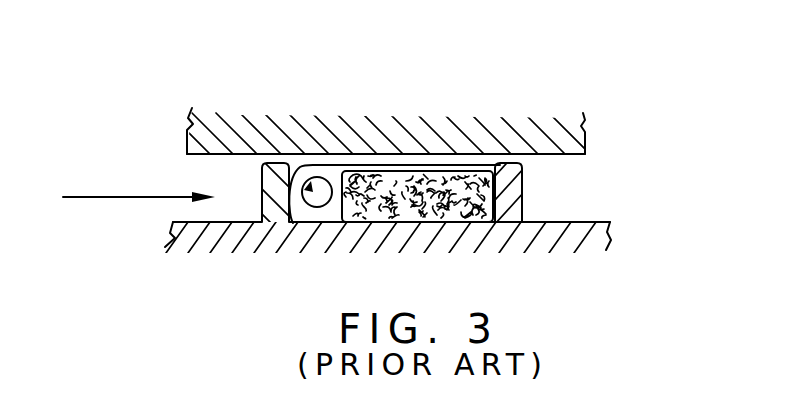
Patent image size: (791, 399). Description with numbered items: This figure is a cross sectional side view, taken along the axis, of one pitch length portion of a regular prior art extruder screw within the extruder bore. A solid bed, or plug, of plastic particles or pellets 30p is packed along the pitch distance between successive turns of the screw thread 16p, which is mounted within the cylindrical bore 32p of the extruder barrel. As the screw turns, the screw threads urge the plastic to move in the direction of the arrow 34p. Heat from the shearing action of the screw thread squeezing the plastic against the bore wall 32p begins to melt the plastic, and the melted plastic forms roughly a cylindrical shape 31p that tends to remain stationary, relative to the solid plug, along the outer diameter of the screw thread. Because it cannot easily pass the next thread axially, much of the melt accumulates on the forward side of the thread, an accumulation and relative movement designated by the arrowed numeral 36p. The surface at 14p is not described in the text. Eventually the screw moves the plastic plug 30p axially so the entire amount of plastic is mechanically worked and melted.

The shaft (prior art) 14p is at (385, 222).
The screw thread 16p is at (514, 206).
The plastic particles or pellets 30p is at (480, 191).
The cylindrical shape of melted plastic 31p is at (375, 165).
The cylindrical bore 32p is at (464, 156).
The arrow 34p is at (91, 197).
The accumulation and relative movement of melted plastic 36p is at (313, 207).